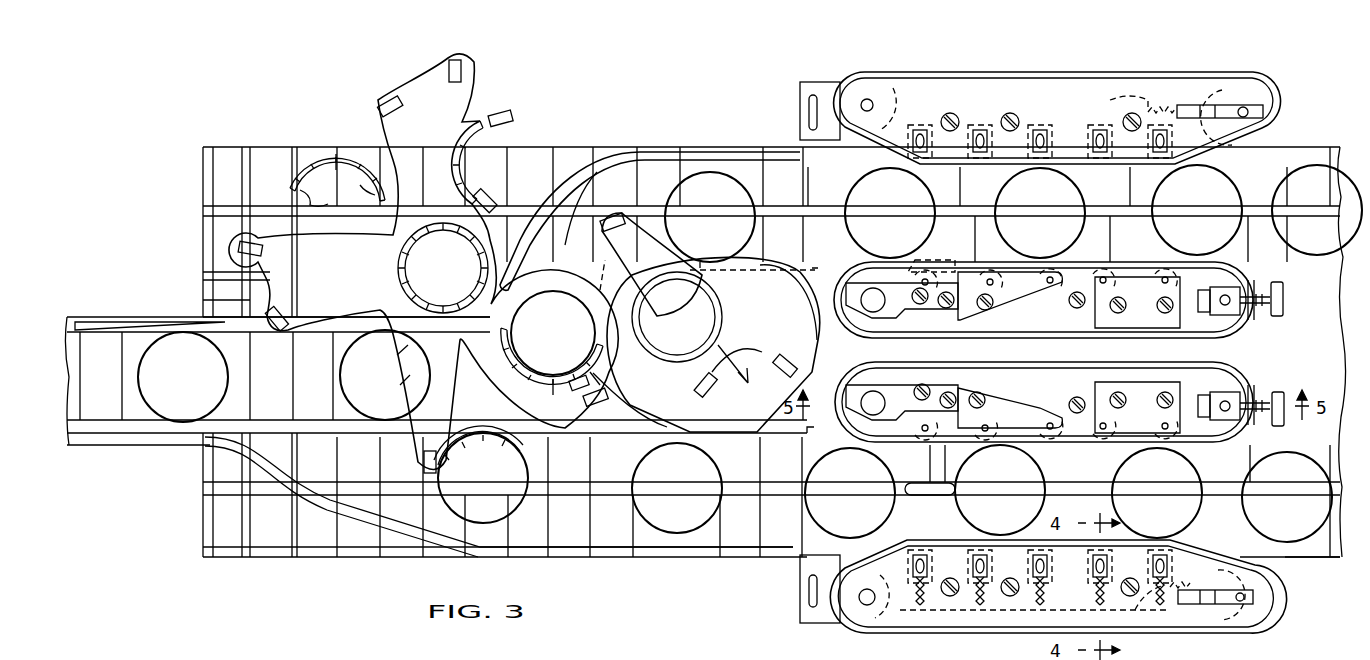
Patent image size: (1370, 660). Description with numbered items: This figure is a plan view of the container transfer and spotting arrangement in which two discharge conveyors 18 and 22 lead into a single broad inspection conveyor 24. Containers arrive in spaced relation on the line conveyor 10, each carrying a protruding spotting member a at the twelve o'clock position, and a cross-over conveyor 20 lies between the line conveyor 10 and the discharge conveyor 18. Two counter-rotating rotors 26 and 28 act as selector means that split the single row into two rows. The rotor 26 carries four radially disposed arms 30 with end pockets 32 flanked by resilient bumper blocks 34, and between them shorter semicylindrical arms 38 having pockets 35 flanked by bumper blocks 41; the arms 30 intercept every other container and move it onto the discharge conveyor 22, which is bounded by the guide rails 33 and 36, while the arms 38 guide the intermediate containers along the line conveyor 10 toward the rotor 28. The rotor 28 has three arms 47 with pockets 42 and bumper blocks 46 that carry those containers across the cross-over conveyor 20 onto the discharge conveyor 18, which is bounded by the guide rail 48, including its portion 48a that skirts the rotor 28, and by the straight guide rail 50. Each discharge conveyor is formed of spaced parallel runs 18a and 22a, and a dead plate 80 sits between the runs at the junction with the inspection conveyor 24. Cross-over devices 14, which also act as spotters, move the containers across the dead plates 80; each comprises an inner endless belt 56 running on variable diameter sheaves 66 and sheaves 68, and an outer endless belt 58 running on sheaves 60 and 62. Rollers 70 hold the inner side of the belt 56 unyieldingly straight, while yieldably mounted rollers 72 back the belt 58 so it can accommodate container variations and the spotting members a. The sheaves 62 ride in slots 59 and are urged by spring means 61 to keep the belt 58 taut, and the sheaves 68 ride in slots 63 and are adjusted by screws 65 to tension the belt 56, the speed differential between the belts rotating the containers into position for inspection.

The line conveyor 10 is at (439, 369).
The cross-over devices 14 is at (1072, 355).
The discharge conveyor 18 is at (743, 352).
The spaced parallel runs 18a is at (201, 166).
The cross-over conveyor 20 is at (201, 284).
The discharge conveyor 22 is at (731, 395).
The spaced parallel runs 22a is at (201, 460).
The inspection conveyor 24 is at (1335, 316).
The rotor 26 is at (400, 282).
The rotor 28 is at (719, 322).
The radially disposed arms 30 is at (423, 263).
The recesses or pockets 32 is at (470, 108).
The guide rail 33 is at (663, 556).
The resilient bumper blocks 34 is at (396, 102).
The pockets 35 is at (336, 155).
The guide rail 36 is at (662, 432).
The arms 38 is at (320, 157).
The bumper blocks 41 is at (520, 106).
The recesses or pockets 42 is at (740, 355).
The bumper blocks 46 is at (698, 382).
The radially disposed arms 47 is at (755, 319).
The guide rail 48 is at (650, 199).
The guide rail portion 48a is at (580, 178).
The guide rail 50 is at (805, 278).
The inner endless belt 56 is at (1062, 350).
The outer endless belt 58 is at (1265, 92).
The slots 59 is at (1241, 88).
The sheaves 60 is at (898, 100).
The spring means 61 is at (1125, 100).
The sheaves 62 is at (1282, 125).
The slots 63 is at (1222, 262).
The screws 65 is at (1278, 391).
The variable diameter sheaves 66 is at (870, 275).
The sheaves 68 is at (1230, 385).
The rollers 70 is at (1140, 265).
The rollers 72 is at (1128, 162).
The dead plates 80 is at (957, 489).
The spotting members a is at (205, 318).